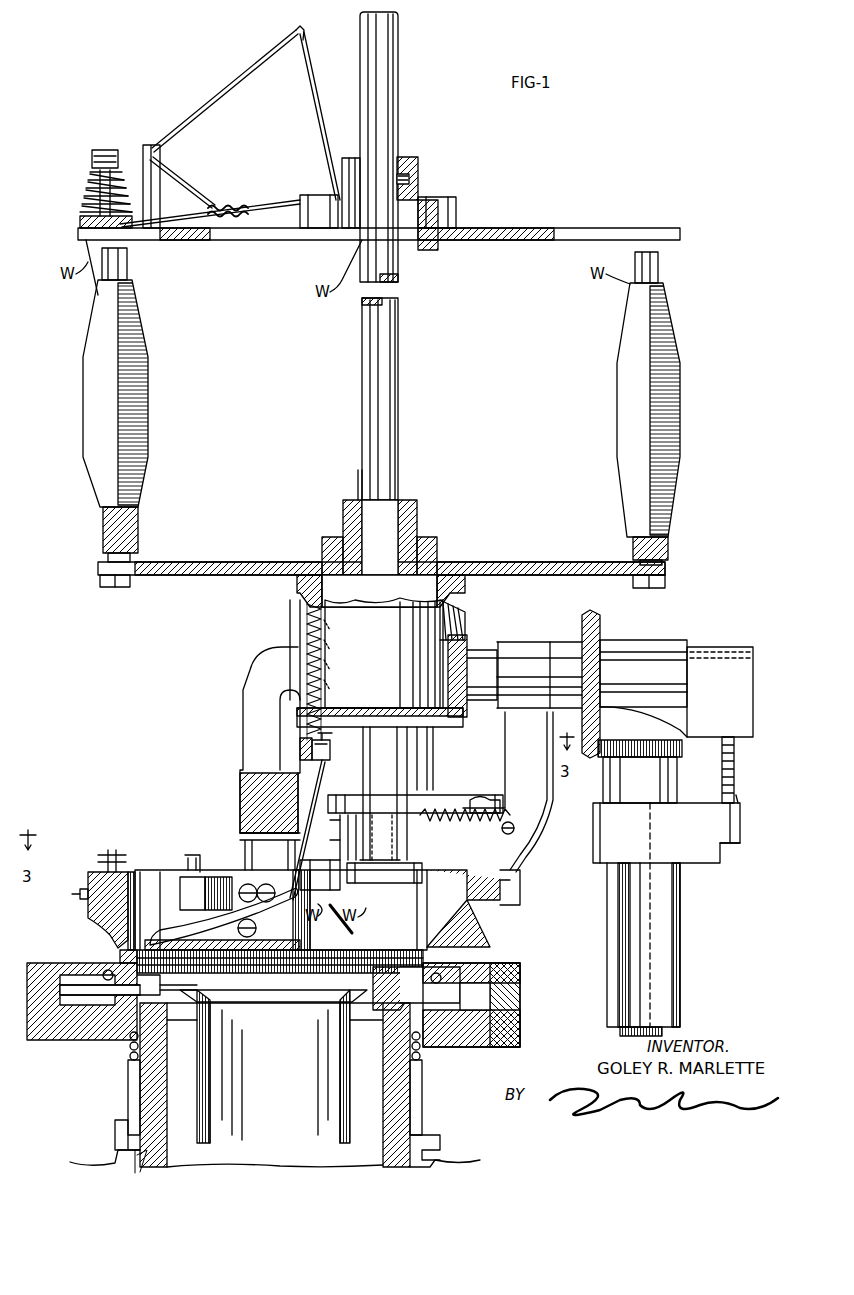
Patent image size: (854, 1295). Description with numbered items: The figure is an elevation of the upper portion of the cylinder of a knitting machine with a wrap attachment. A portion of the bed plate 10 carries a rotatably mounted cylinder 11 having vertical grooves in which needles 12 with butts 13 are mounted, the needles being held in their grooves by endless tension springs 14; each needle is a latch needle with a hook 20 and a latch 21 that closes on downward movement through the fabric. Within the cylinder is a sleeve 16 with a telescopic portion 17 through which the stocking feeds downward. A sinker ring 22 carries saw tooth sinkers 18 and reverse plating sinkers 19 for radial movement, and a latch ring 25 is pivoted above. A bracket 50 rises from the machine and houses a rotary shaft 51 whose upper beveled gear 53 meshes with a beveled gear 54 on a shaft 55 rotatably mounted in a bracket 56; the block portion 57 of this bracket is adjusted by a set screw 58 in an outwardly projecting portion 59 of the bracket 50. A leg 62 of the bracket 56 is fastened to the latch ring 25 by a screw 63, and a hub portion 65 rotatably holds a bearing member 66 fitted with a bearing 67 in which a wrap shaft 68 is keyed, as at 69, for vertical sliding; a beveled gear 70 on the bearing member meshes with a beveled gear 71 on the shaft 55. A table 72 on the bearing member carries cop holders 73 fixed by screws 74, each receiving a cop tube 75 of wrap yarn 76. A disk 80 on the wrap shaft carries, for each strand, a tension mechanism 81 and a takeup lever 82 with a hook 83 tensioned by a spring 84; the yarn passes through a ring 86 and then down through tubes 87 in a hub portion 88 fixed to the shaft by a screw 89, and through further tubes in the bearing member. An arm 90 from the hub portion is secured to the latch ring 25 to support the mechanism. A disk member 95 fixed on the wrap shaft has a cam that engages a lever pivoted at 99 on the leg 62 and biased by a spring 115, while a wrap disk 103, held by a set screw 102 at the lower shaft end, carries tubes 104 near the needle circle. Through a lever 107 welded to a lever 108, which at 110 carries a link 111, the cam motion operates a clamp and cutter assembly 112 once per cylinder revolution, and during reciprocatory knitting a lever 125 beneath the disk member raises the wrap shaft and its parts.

The bed plate 10 is at (96, 1160).
The cylinder 11 is at (383, 1134).
The needles 12 is at (128, 1070).
The butts 13 is at (116, 1130).
The endless tension springs 14 is at (128, 1050).
The sleeve 16 is at (198, 1118).
The telescopic portion 17 is at (197, 992).
The saw tooth sinkers 18 is at (430, 966).
The reverse plating sinkers 19 is at (112, 963).
The hook 20 is at (418, 926).
The latch 21 is at (134, 960).
The sinker ring 22 is at (505, 966).
The latch ring 25 is at (470, 914).
The bracket 50 is at (680, 986).
The rotary shaft 51 is at (622, 1036).
The beveled gear 53 is at (682, 752).
The beveled gear 54 is at (600, 636).
The shaft 55 is at (652, 644).
The bracket 56 is at (704, 647).
The block portion 57 is at (738, 740).
The set screw 58 is at (737, 800).
The outwardly projecting portion 59 is at (684, 850).
The leg 62 is at (505, 728).
The screw 63 is at (498, 896).
The hub portion 65 is at (448, 622).
The bearing member 66 is at (468, 592).
The bearing 67 is at (420, 518).
The wrap shaft 68 is at (398, 140).
The keyed arrangement 69 is at (358, 486).
The beveled gear 70 is at (445, 727).
The beveled gear 71 is at (468, 640).
The table 72 is at (494, 562).
The cop holders 73 is at (132, 558).
The screws 74 is at (128, 587).
The cop tube 75 is at (138, 545).
The wrap yarn 76 is at (146, 436).
The disk 80 is at (508, 228).
The tension mechanism 81 is at (80, 220).
The tension takeup lever 82 is at (226, 92).
The hook 83 is at (302, 30).
The tension spring 84 is at (206, 208).
The ring 86 is at (302, 195).
The tubes 87 is at (427, 246).
The hub portion 88 is at (351, 148).
The screw 89 is at (414, 172).
The arm 90 is at (243, 700).
The disk member 95 is at (352, 795).
The pivot 99 is at (478, 798).
The set screw 102 is at (400, 850).
The wrap disk 103 is at (384, 873).
The tubes 104 is at (326, 870).
The lever 107 is at (300, 622).
The lever 108 is at (300, 752).
The securing point 110 is at (330, 750).
The link 111 is at (328, 734).
The clamp and cutter assembly 112 is at (256, 922).
The spring 115 is at (460, 830).
The lever 125 is at (358, 824).